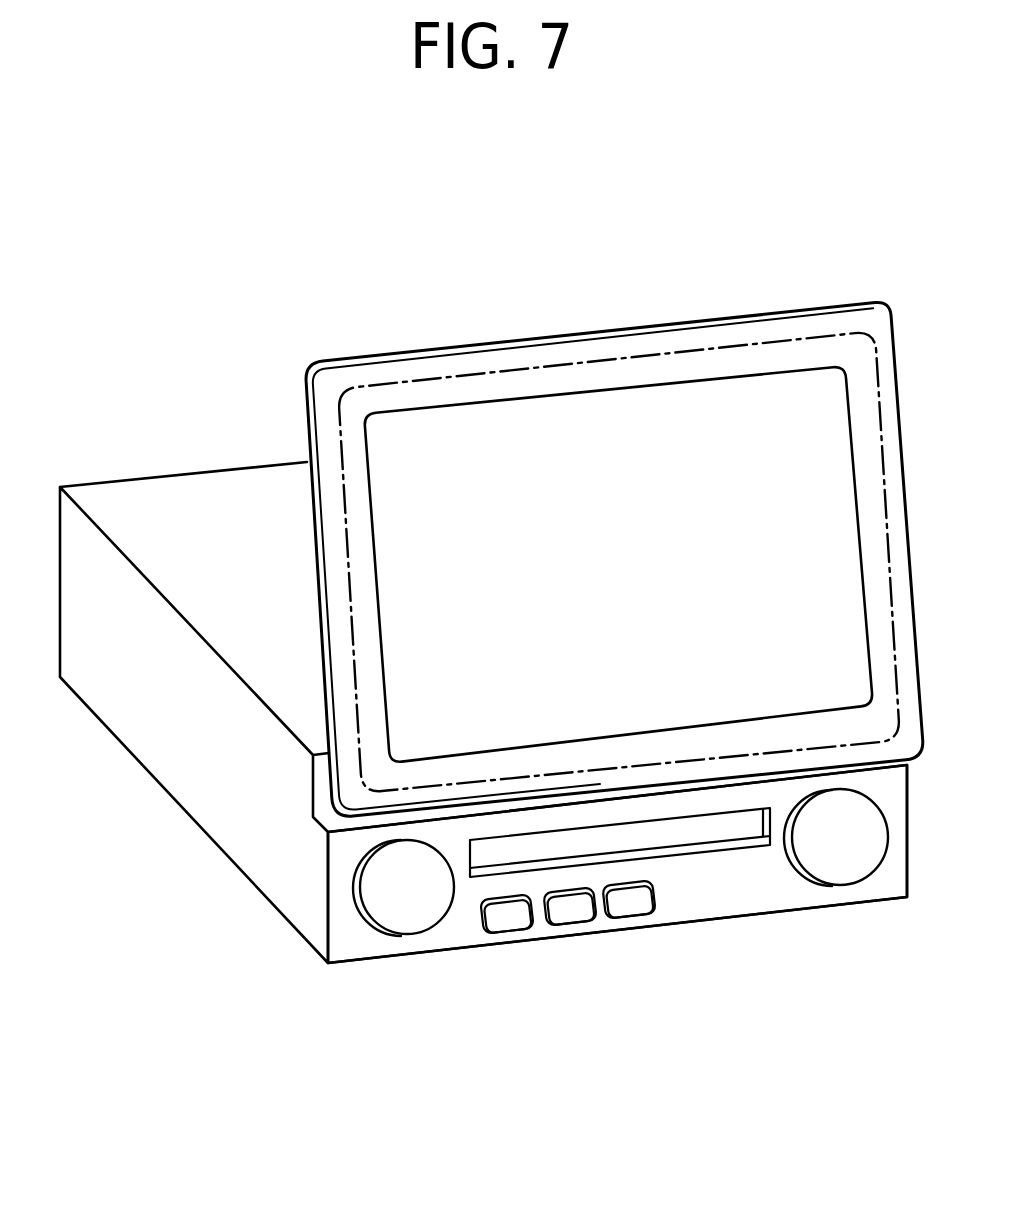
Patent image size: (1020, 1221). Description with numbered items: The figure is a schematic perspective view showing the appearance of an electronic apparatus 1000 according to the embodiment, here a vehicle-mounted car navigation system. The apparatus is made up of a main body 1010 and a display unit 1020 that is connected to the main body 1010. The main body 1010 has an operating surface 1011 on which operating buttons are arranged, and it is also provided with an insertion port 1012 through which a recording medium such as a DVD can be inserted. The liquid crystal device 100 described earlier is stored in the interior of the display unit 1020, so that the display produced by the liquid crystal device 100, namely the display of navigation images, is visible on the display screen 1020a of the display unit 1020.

The electronic apparatus 1000 is at (168, 173).
The main body 1010 is at (222, 858).
The operating surface 1011 is at (747, 883).
The insertion port 1012 is at (533, 848).
The display unit 1020 is at (553, 337).
The display screen 1020a is at (652, 470).
The liquid crystal device 100 is at (493, 375).